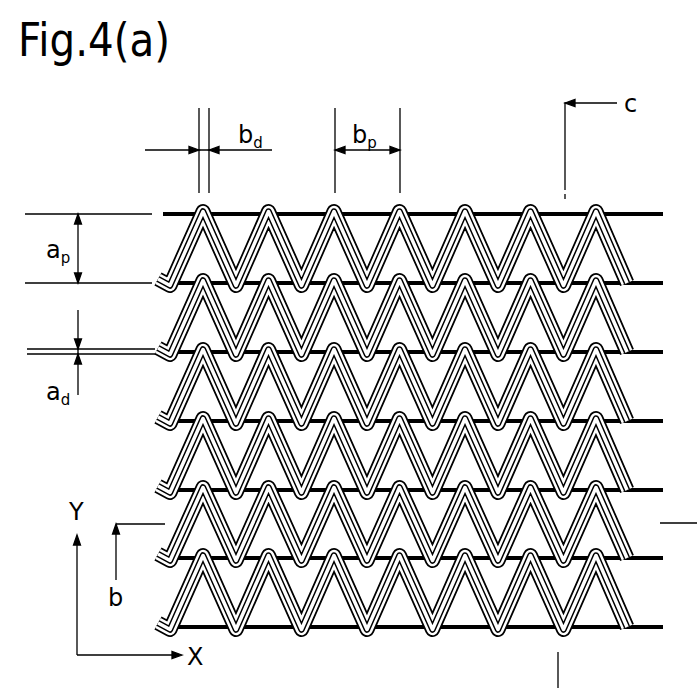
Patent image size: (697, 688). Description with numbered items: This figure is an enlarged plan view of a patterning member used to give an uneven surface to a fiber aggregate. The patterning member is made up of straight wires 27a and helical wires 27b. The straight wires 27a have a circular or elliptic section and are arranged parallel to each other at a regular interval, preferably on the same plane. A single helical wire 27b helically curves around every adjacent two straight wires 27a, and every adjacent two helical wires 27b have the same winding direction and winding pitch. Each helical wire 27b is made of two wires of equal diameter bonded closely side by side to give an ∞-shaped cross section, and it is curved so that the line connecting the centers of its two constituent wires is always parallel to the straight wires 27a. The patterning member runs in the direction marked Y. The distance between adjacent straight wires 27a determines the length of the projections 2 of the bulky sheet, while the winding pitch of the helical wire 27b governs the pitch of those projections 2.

The straight wire 27a is at (496, 209).
The helical wire 27b is at (608, 203).
The projection 2 is at (430, 404).